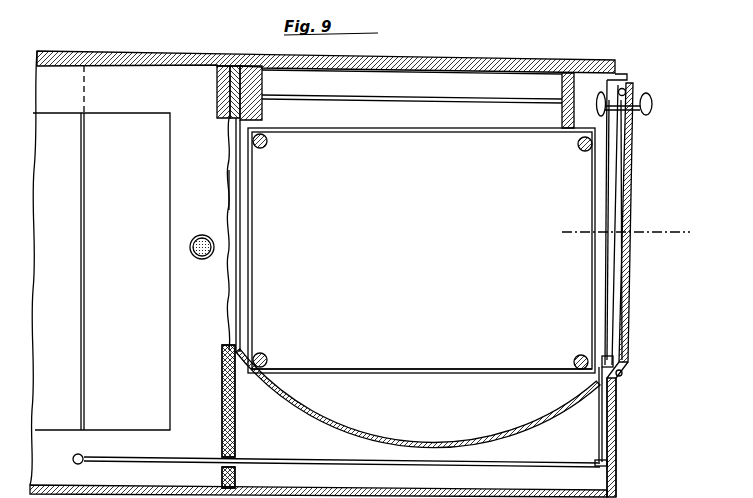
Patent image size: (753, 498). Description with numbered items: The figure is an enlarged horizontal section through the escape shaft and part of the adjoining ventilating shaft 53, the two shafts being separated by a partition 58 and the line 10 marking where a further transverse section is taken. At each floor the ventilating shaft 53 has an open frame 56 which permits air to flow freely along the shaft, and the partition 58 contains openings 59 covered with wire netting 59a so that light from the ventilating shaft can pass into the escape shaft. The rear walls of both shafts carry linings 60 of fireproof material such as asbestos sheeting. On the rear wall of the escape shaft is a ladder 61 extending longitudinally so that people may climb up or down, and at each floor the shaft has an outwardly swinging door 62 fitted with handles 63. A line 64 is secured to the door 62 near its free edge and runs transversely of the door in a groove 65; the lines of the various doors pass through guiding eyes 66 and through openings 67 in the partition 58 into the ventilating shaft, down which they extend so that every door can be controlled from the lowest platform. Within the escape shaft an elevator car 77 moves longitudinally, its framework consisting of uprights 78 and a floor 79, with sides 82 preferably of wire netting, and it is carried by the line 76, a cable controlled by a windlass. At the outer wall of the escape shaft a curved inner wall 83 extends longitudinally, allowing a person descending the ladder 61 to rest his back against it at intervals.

The section line 10 is at (584, 230).
The ventilating shaft 53 is at (45, 485).
The open frame 56 is at (172, 266).
The partition 58 is at (222, 380).
The openings 59 is at (238, 228).
The wire netting 59a is at (232, 190).
The linings 60 is at (155, 67).
The ladder 61 is at (503, 101).
The door 62 is at (634, 195).
The handles 63 is at (634, 98).
The line 64 is at (625, 242).
The groove 65 is at (633, 285).
The guiding eyes 66 is at (604, 360).
The openings 67 is at (215, 464).
The line 76 is at (202, 260).
The elevator car 77 is at (422, 252).
The uprights 78 is at (266, 357).
The floor 79 is at (410, 373).
The sides 82 is at (497, 133).
The curved inner wall 83 is at (458, 444).